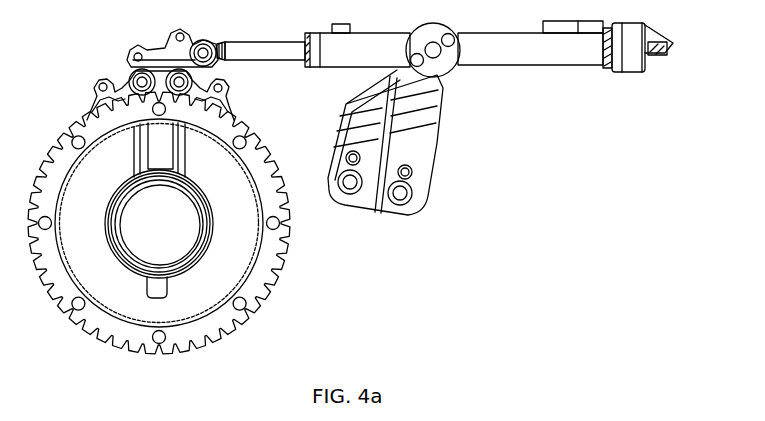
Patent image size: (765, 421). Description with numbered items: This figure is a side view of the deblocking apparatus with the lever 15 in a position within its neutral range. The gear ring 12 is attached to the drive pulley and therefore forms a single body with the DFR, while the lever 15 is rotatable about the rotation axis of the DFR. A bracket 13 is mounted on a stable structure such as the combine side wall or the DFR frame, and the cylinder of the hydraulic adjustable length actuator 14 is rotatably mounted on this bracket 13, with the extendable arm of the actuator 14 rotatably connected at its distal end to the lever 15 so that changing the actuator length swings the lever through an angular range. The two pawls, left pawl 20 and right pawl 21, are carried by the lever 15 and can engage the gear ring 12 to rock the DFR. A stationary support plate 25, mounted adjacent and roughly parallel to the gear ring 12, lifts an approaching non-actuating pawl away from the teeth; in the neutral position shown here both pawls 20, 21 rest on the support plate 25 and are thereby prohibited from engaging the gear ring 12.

The gear ring 12 is at (267, 268).
The bracket 13 is at (410, 140).
The hydraulic adjustable length actuator 14 is at (510, 50).
The lever 15 is at (148, 149).
The left pawl 20 is at (120, 85).
The right pawl 21 is at (213, 90).
The support plate 25 is at (98, 102).